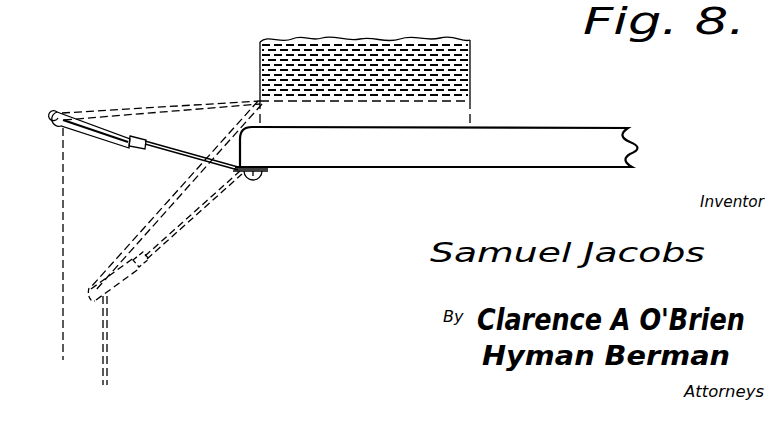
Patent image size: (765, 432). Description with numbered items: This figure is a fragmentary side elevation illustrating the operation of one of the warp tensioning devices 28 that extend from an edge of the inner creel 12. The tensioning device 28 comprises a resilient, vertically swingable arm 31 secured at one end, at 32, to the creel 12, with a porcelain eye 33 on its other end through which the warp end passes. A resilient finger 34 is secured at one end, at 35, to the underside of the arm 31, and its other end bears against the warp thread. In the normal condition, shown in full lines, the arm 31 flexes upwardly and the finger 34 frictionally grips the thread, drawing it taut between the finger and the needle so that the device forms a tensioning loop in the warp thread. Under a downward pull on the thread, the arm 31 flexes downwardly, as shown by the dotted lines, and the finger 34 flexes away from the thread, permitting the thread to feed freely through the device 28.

The inner creel 12 is at (372, 162).
The tensioning device 28 is at (187, 152).
The resilient vertically swingable arm 31 is at (170, 151).
The arm securing point 32 is at (254, 180).
The porcelain eye 33 is at (61, 112).
The resilient finger 34 is at (102, 143).
The finger securing point 35 is at (138, 135).